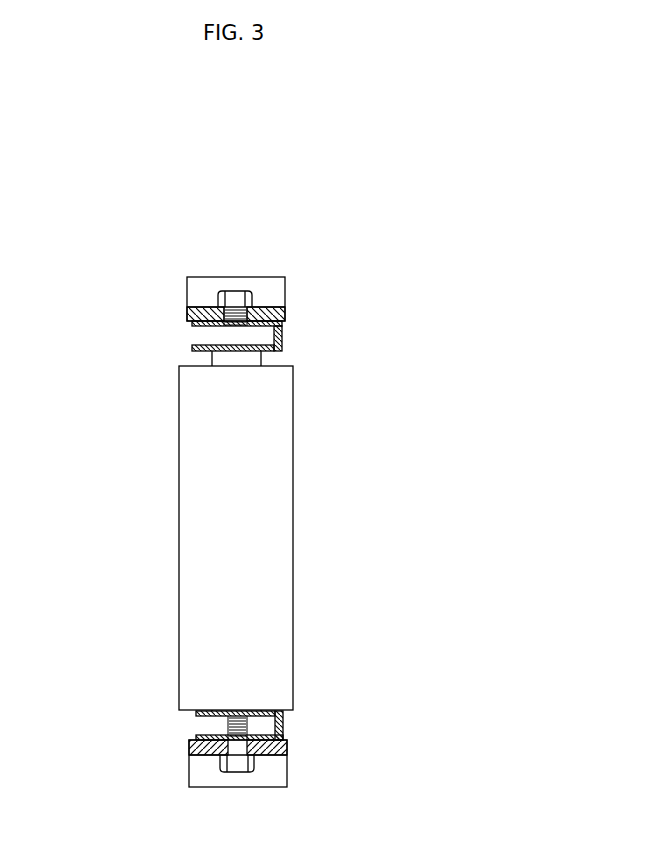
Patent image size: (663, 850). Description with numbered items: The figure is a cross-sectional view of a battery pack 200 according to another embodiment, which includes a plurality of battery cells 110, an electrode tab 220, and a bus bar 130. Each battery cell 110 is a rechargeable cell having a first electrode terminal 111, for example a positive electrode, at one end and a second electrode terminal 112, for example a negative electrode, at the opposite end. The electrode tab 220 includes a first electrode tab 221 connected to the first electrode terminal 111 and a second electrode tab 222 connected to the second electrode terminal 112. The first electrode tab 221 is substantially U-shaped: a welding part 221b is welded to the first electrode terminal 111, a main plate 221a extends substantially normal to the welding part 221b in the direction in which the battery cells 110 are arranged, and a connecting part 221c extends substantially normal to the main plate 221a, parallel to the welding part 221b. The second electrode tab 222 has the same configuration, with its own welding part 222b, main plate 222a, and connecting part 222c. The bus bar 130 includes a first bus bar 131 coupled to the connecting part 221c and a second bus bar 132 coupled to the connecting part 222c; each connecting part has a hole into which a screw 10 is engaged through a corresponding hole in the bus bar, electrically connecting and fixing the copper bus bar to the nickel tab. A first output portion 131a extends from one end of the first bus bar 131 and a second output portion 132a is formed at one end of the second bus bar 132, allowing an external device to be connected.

The battery pack 200 is at (98, 242).
The bus bar 130 is at (93, 307).
The first bus bar 131 is at (187, 310).
The first output portion 131a is at (267, 285).
The battery cell 110 is at (179, 537).
The first electrode terminal 111 is at (221, 362).
The second electrode terminal 112 is at (224, 710).
The second bus bar 132 is at (190, 750).
The second output portion 132a is at (268, 777).
The screw 10 is at (233, 297).
The electrode tab 220 is at (465, 322).
The first electrode tab 221 is at (390, 289).
The main plate 221a is at (279, 336).
The welding part 221b is at (262, 352).
The connecting part 221c is at (278, 310).
The second electrode tab 222 is at (393, 692).
The main plate of second electrode tab 222a is at (283, 725).
The welding part of second electrode tab 222b is at (257, 710).
The connecting part of second electrode tab 222c is at (265, 755).